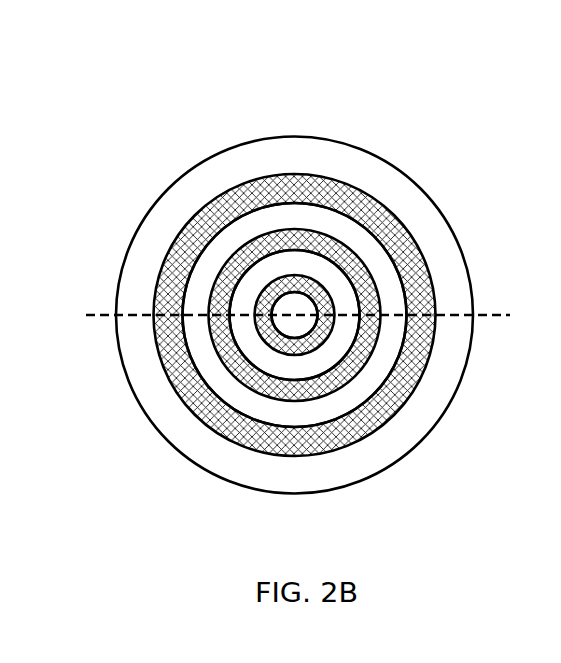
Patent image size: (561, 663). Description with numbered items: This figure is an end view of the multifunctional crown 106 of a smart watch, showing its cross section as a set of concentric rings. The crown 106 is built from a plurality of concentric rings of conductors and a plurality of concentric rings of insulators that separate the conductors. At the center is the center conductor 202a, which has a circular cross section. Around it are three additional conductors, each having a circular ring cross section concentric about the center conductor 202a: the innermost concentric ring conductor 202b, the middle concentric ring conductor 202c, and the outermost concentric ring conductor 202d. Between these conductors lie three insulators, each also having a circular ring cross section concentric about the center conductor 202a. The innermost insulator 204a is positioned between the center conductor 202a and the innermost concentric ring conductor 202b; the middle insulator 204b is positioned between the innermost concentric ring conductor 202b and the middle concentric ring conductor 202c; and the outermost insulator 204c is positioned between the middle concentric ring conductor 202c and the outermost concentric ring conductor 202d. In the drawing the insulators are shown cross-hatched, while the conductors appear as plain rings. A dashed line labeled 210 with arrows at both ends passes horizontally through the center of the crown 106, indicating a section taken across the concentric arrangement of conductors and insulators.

The multifunctional crown 106 is at (310, 118).
The center conductor 202a is at (287, 322).
The innermost concentric ring conductor 202b is at (333, 352).
The middle concentric ring conductor 202c is at (388, 283).
The outermost concentric ring conductor 202d is at (363, 160).
The innermost insulator 204a is at (283, 350).
The middle insulator 204b is at (372, 342).
The outermost insulator 204c is at (390, 215).
The section line 210 is at (87, 315).